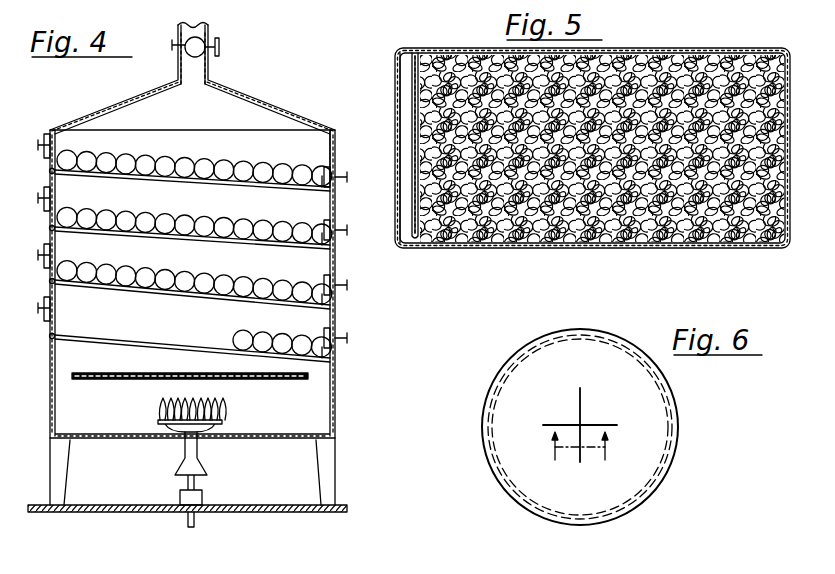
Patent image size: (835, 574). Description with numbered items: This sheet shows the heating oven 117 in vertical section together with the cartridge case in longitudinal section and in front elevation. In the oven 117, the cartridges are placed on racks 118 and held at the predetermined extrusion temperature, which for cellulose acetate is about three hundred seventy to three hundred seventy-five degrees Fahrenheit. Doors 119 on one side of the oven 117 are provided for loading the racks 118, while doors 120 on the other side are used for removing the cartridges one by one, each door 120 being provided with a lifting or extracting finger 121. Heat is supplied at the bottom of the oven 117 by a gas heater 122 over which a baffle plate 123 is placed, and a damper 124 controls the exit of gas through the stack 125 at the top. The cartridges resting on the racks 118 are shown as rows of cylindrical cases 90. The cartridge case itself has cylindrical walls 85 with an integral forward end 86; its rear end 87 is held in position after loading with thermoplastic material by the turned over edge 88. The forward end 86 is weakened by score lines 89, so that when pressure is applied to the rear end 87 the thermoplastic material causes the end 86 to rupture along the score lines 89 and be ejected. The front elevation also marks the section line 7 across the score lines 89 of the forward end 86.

In FIG. 4, the doors 119 is at (48, 134).
In FIG. 4, the damper 124 is at (197, 42).
In FIG. 4, the stack 125 is at (190, 74).
In FIG. 4, the coated balls 90 is at (243, 170).
In FIG. 4, the oven 117 is at (337, 136).
In FIG. 4, the racks 118 is at (222, 187).
In FIG. 4, the lifting or extracting finger 121 is at (314, 198).
In FIG. 4, the doors 120 is at (338, 190).
In FIG. 4, the baffle plate 123 is at (310, 378).
In FIG. 4, the gas heater 122 is at (222, 424).
In FIG. 5, the turned over edge 88 is at (406, 62).
In FIG. 5, the rear end 87 is at (412, 108).
In FIG. 5, the cylindrical walls 85 is at (698, 51).
In FIG. 6, the cylindrical walls 85 is at (483, 423).
In FIG. 5, the integral forward end 86 is at (795, 70).
In FIG. 6, the integral forward end 86 is at (650, 428).
In FIG. 6, the score lines 89 is at (578, 401).
In FIG. 6, the section line 7- 7 is at (577, 446).